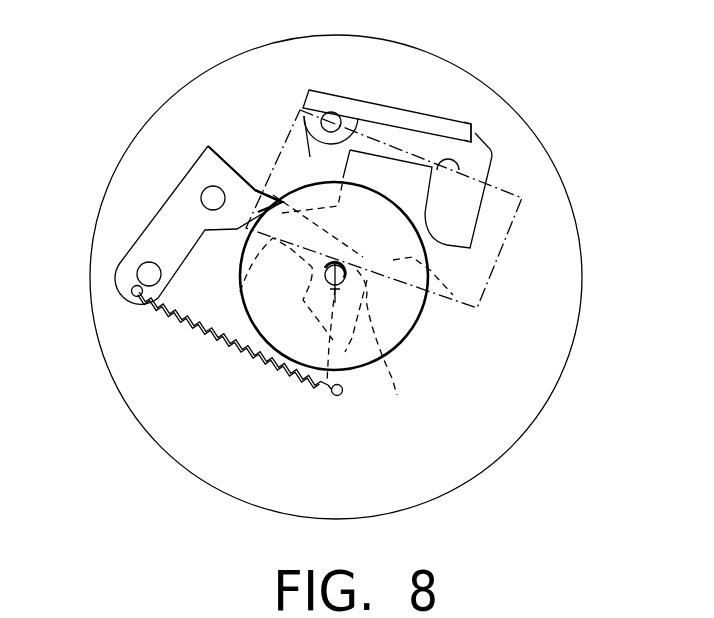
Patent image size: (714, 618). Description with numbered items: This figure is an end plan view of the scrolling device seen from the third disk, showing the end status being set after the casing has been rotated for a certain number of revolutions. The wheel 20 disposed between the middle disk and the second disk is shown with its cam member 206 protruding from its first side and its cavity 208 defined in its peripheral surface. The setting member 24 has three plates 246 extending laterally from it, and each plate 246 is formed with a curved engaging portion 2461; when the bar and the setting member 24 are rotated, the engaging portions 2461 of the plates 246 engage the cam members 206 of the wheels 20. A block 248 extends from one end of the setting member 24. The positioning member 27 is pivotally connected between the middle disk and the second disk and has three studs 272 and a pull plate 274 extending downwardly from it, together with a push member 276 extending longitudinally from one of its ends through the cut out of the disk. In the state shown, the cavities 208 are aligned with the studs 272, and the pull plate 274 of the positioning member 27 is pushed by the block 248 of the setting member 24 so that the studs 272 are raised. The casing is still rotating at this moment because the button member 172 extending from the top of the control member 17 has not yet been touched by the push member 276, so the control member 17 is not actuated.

The control member 17 is at (494, 262).
The wheel 20 is at (349, 370).
The setting member 24 is at (152, 191).
The positioning member 27 is at (432, 92).
The button member 172 is at (460, 163).
The cam member 206 is at (460, 357).
The cavity 208 is at (516, 313).
The plate 246 is at (229, 253).
The curved engaging portion 2461 is at (321, 386).
The block 248 is at (260, 197).
The stud 272 is at (490, 168).
The pull plate 274 is at (310, 157).
The push member 276 is at (466, 130).